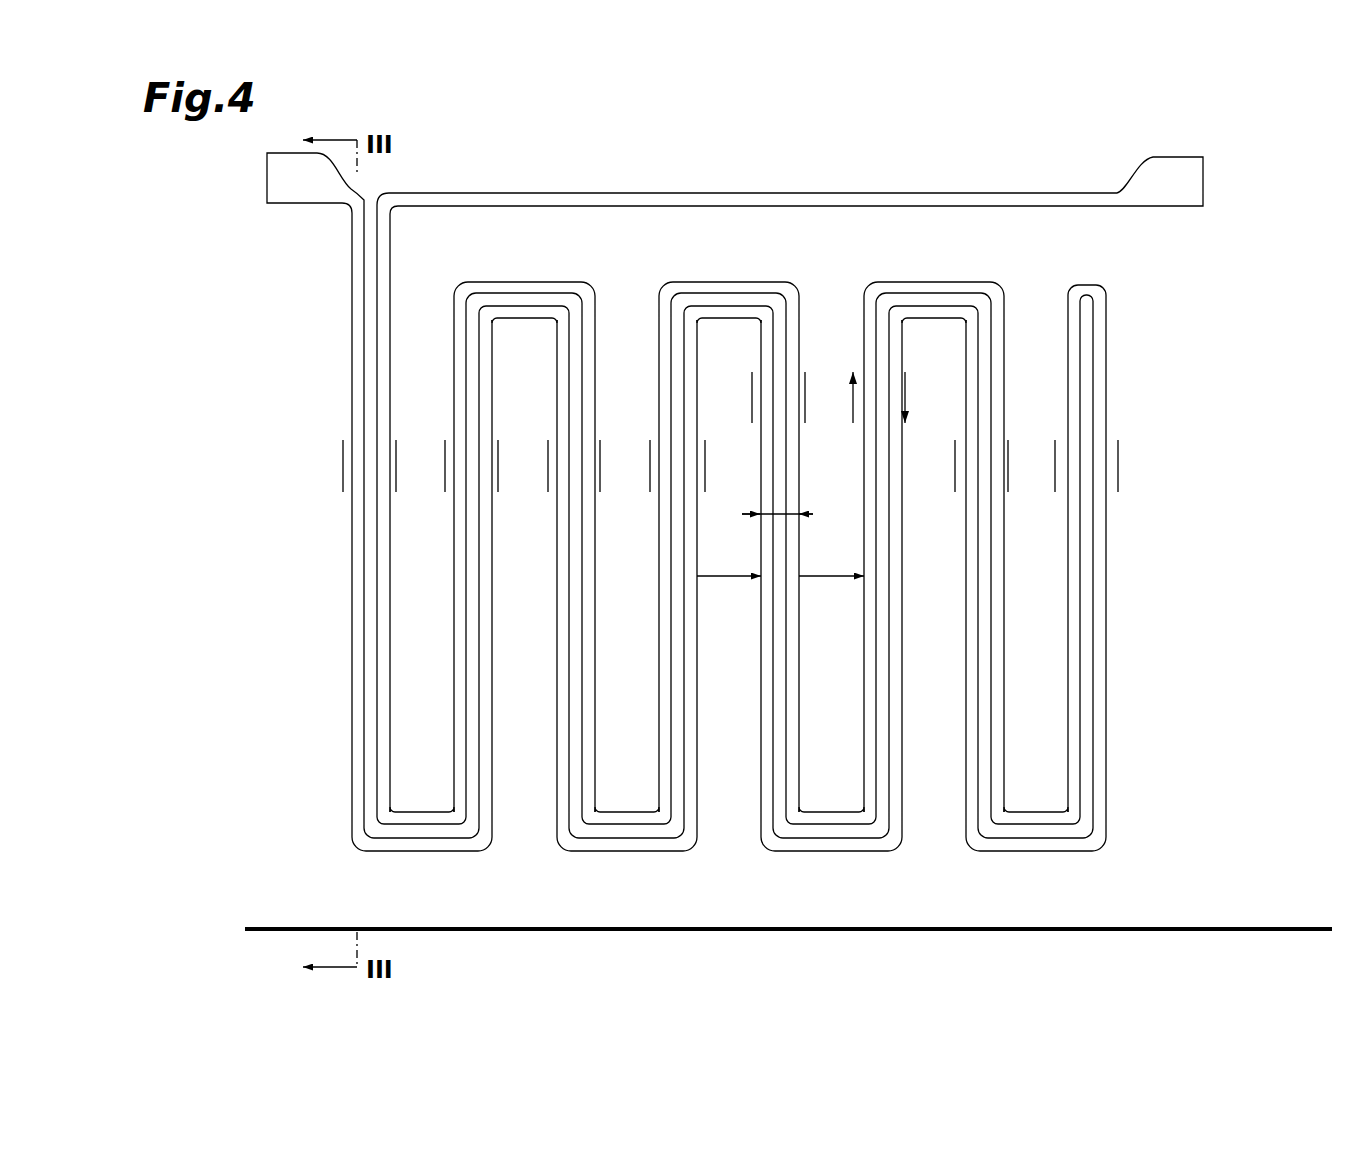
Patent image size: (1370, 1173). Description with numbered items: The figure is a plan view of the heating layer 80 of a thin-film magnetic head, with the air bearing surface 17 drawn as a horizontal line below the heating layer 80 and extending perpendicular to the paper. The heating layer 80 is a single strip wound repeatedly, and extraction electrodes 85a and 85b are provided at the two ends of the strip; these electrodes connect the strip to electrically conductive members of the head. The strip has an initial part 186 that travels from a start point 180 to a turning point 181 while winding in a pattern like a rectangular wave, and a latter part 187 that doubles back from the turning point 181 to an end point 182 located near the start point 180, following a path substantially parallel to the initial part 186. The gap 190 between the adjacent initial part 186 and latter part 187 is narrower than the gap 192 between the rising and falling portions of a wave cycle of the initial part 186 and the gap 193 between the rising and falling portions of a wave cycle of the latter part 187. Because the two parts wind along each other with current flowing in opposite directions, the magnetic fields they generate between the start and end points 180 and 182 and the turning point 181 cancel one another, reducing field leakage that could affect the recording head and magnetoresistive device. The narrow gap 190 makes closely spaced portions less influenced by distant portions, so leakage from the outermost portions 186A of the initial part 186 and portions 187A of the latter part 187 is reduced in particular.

The air bearing surface 17 is at (1300, 928).
The heating layer 80 is at (1124, 842).
The extraction electrode 85a is at (290, 190).
The extraction electrode 85b is at (1175, 187).
The start point 180 is at (385, 254).
The turning point 181 is at (1090, 283).
The end point 182 is at (352, 258).
The initial part 186 is at (662, 322).
The portion of the initial part 186A is at (382, 725).
The latter part 187 is at (355, 802).
The portion of the latter part 187A is at (353, 735).
The gap 190 is at (778, 512).
The gap 192 is at (825, 578).
The gap 193 is at (728, 578).